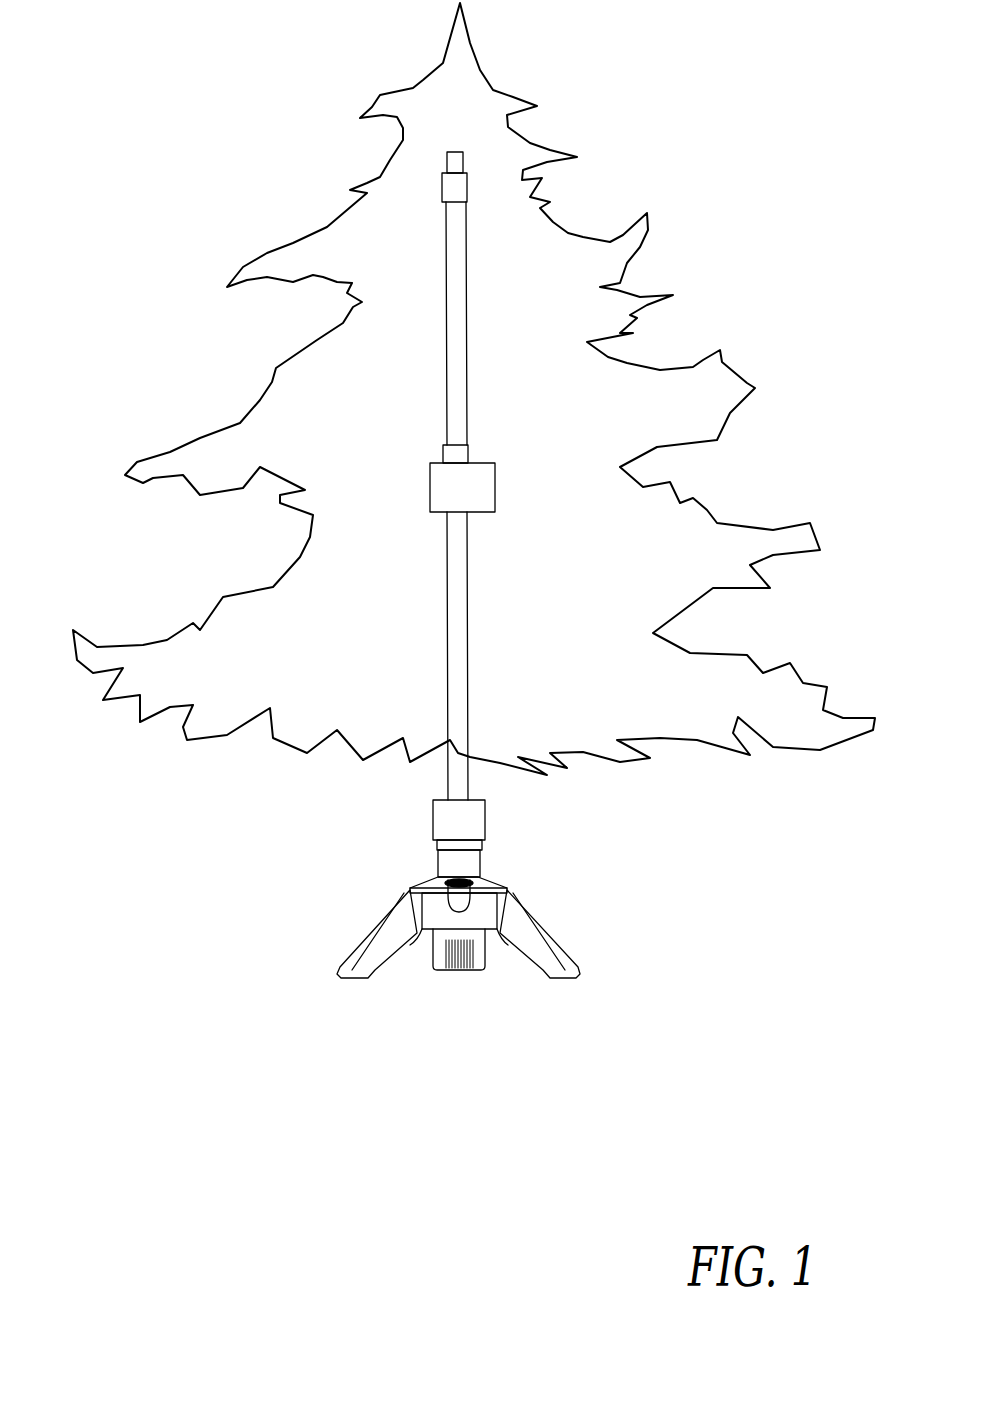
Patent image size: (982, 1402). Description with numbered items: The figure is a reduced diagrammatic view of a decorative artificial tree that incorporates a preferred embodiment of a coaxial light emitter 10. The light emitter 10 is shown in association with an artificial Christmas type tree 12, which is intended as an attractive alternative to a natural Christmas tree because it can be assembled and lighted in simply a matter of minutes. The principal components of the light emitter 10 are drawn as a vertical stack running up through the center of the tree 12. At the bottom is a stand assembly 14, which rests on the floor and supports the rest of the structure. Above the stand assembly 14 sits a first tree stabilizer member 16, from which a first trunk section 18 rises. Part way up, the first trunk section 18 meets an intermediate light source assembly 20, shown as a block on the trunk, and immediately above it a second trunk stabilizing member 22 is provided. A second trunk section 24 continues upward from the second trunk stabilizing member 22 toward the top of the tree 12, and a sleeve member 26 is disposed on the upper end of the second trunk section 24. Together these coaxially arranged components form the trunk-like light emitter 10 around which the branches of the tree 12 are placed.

The coaxial light emitter 10 is at (469, 565).
The artificial Christmas type tree 12 is at (207, 372).
The stand assembly 14 is at (503, 888).
The first tree stabilizer member 16 is at (477, 828).
The first trunk section 18 is at (470, 657).
The intermediate light source assembly 20 is at (497, 492).
The second trunk stabilizing member 22 is at (470, 450).
The second trunk section 24 is at (467, 377).
The sleeve member 26 is at (467, 187).